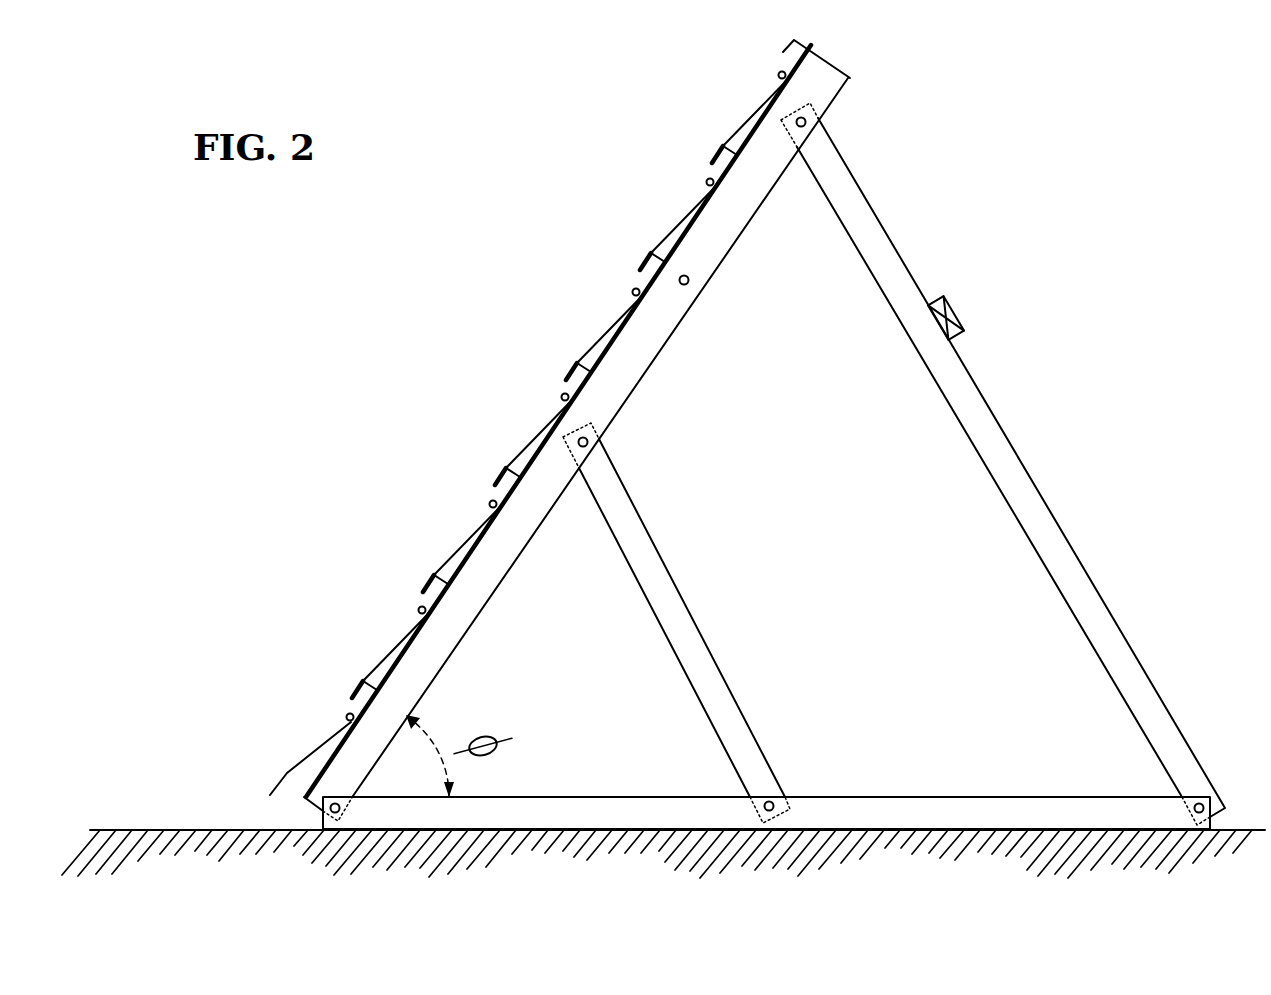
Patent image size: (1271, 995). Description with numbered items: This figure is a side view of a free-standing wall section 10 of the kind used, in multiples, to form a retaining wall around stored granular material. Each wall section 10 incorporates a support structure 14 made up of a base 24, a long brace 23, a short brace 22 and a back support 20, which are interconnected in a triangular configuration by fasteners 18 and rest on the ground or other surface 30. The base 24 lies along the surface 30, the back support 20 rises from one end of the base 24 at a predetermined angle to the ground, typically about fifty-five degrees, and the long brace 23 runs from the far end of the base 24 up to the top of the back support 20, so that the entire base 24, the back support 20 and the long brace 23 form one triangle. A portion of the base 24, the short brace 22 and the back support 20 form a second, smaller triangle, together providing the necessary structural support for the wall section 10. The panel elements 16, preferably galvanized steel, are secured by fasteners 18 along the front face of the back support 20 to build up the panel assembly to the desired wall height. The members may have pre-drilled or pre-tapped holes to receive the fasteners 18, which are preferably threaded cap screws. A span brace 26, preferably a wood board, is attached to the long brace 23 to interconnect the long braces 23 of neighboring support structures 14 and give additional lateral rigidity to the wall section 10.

The wall section 10 is at (588, 117).
The support structure 14 is at (1108, 371).
The panel element 16 is at (374, 656).
The fastener 18 is at (490, 505).
The back support 20 is at (607, 404).
The short brace 22 is at (690, 648).
The long brace 23 is at (1080, 584).
The base 24 is at (917, 812).
The span brace 26 is at (960, 318).
The surface 30 is at (1018, 846).